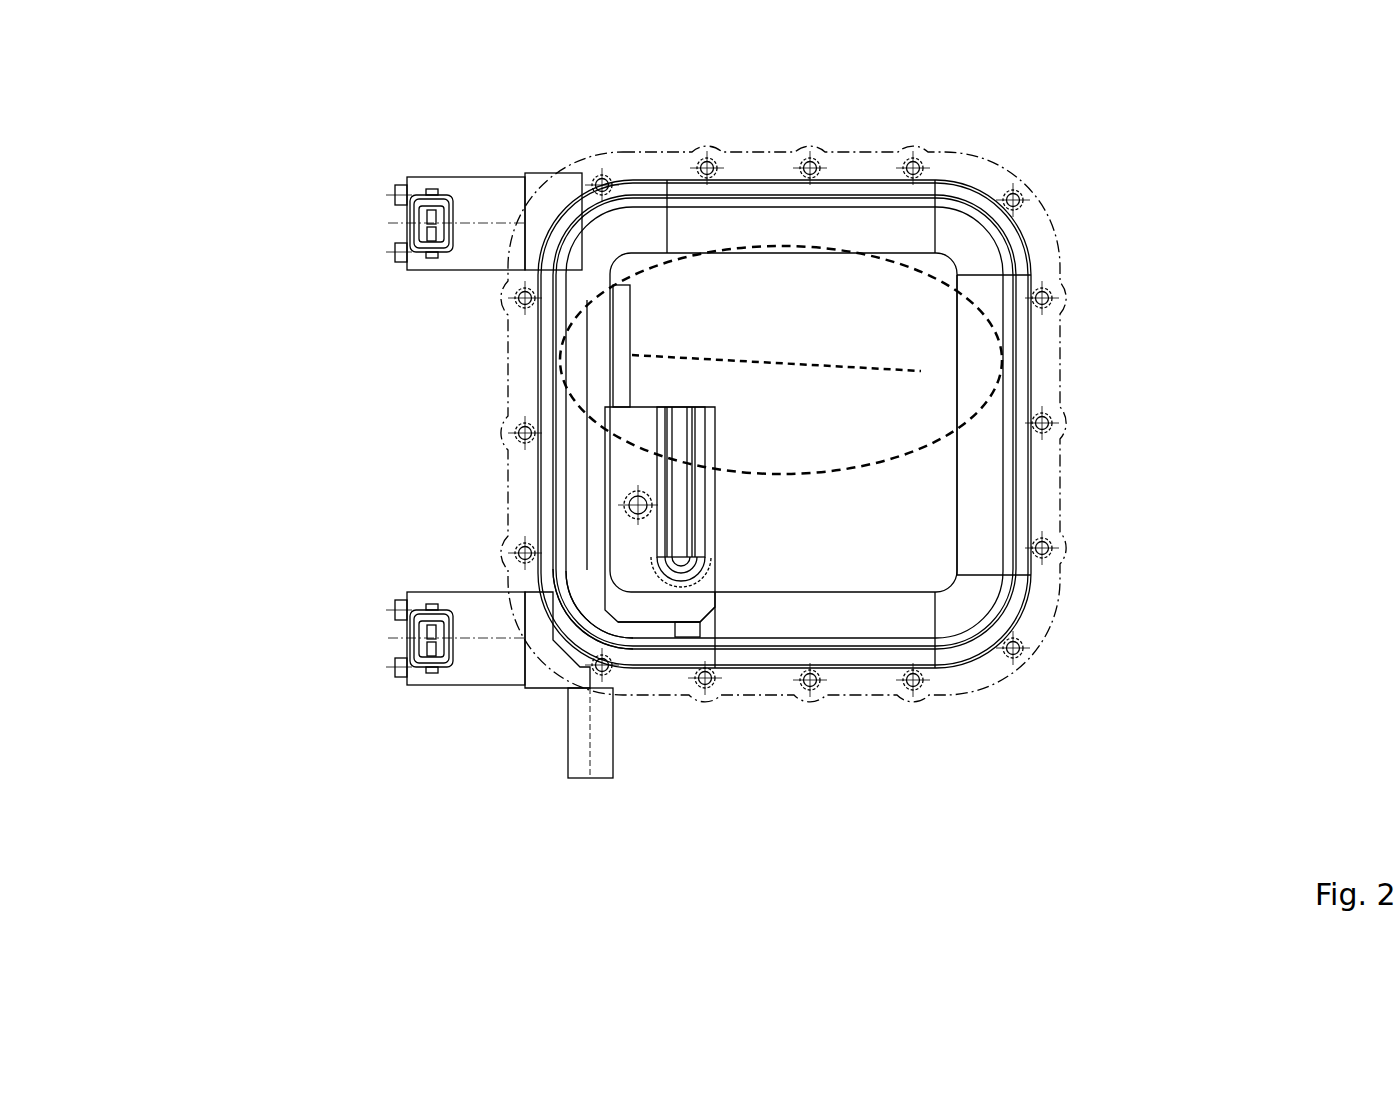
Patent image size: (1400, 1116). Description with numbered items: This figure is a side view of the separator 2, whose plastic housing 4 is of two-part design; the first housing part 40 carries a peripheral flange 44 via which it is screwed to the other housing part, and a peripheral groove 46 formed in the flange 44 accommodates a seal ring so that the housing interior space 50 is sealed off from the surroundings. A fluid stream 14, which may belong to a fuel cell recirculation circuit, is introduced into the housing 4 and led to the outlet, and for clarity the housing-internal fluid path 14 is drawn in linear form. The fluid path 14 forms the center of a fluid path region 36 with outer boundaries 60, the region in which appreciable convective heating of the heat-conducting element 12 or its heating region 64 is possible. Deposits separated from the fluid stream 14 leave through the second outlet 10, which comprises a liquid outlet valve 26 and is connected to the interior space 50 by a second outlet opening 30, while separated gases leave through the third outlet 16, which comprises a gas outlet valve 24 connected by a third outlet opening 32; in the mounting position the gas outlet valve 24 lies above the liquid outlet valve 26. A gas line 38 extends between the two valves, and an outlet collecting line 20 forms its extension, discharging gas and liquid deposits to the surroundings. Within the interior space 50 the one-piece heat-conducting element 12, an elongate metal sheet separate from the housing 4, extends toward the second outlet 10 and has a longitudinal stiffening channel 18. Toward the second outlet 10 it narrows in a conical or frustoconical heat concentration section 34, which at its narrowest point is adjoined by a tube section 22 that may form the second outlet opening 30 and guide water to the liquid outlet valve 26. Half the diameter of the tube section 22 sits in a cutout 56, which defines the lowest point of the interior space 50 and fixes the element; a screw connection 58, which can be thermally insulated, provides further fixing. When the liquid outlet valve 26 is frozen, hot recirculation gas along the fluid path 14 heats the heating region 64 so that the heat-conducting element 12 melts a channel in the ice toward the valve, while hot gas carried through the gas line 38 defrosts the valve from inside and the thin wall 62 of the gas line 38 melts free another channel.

The separator 2 is at (565, 165).
The housing 4 is at (557, 210).
The second outlet 10 is at (528, 719).
The heat-conducting element 12 is at (608, 433).
The fluid stream 14 is at (765, 358).
The third outlet 16 is at (638, 237).
The stiffening channel 18 is at (665, 474).
The outlet collecting line 20 is at (575, 780).
The tube section 22 is at (637, 642).
The gas outlet valve 24 is at (407, 213).
The liquid outlet valve 26 is at (407, 627).
The second outlet opening 30 is at (694, 776).
The third outlet opening 32 is at (648, 228).
The heat concentration section 34 is at (758, 761).
The fluid path region 36 is at (1003, 358).
The gas line 38 is at (585, 525).
The first housing part 40 is at (947, 692).
The peripheral flange 44 is at (1005, 688).
The peripheral groove 46 is at (1030, 283).
The housing interior space 50 is at (970, 233).
The cutout 56 is at (692, 776).
The screw connection 58 is at (624, 502).
The outer boundaries 60 is at (1000, 398).
The wall 62 is at (597, 572).
The heating region 64 is at (623, 412).